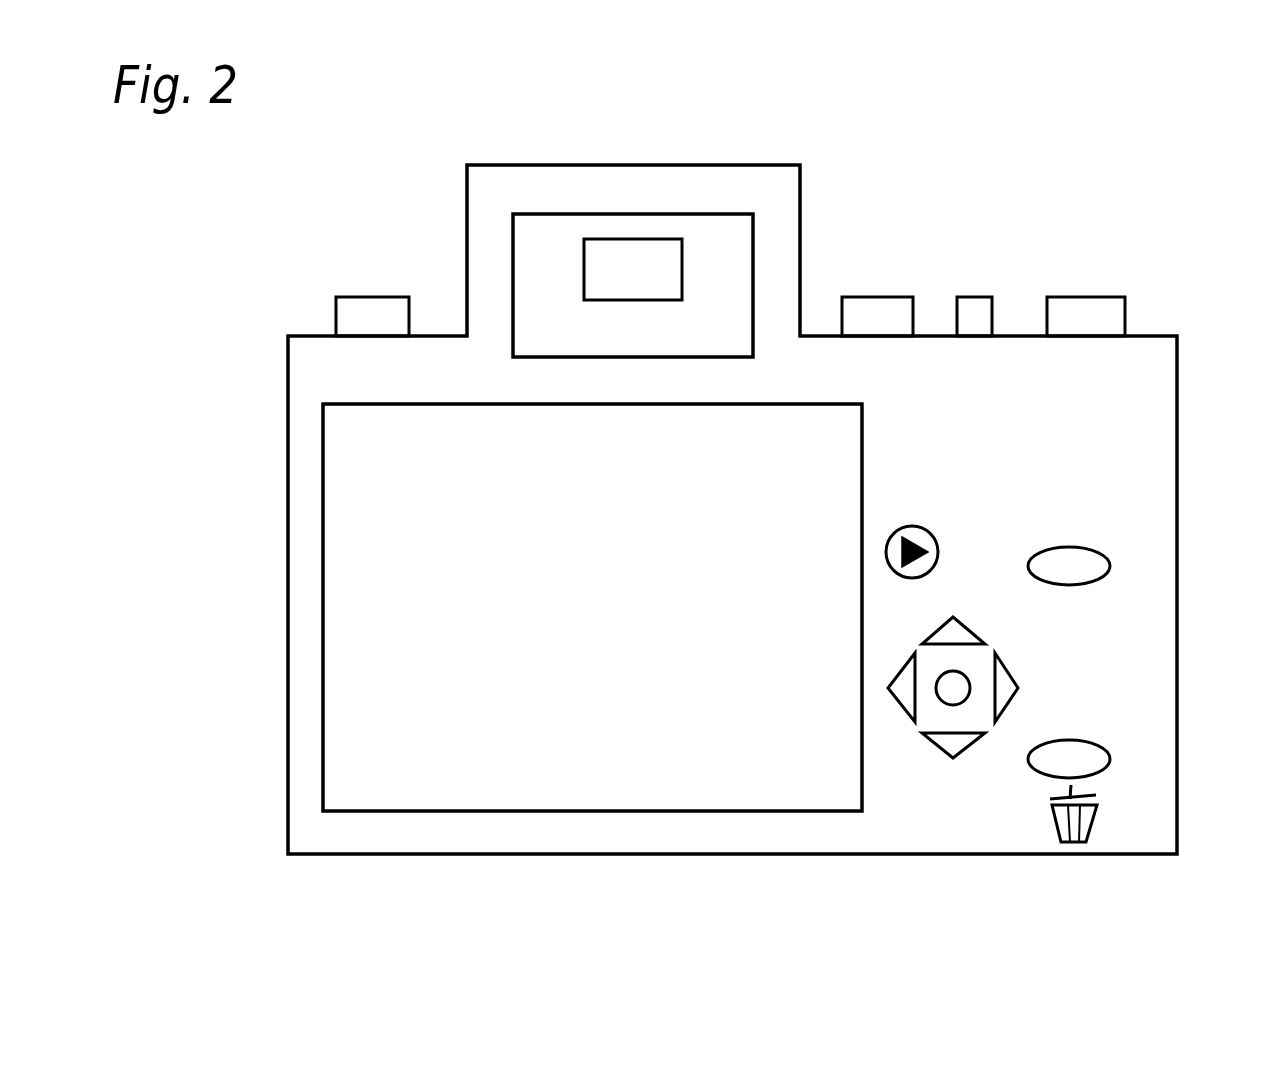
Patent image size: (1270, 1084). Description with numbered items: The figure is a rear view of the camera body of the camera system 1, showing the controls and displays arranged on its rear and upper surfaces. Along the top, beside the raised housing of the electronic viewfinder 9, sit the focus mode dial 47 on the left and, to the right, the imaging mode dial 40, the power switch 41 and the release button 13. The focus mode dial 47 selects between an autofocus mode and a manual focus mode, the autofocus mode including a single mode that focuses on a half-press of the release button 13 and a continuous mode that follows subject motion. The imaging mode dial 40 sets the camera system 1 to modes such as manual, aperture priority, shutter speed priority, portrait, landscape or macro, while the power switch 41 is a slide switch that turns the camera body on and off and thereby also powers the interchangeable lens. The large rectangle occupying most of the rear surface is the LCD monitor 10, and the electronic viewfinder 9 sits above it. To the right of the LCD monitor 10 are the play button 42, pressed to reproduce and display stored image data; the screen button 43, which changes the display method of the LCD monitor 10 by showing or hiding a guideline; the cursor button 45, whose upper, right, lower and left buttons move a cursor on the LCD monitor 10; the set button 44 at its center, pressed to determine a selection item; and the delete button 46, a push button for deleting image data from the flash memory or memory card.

The camera system 1 is at (275, 247).
The electronic viewfinder 9 is at (633, 262).
The LCD monitor 10 is at (425, 775).
The release button 13 is at (1076, 310).
The imaging mode dial 40 is at (872, 317).
The power switch 41 is at (974, 315).
The play button 42 is at (920, 548).
The screen button 43 is at (1075, 560).
The set button 44 is at (956, 692).
The cursor button 45 is at (953, 743).
The delete button 46 is at (1087, 757).
The focus mode dial 47 is at (359, 320).